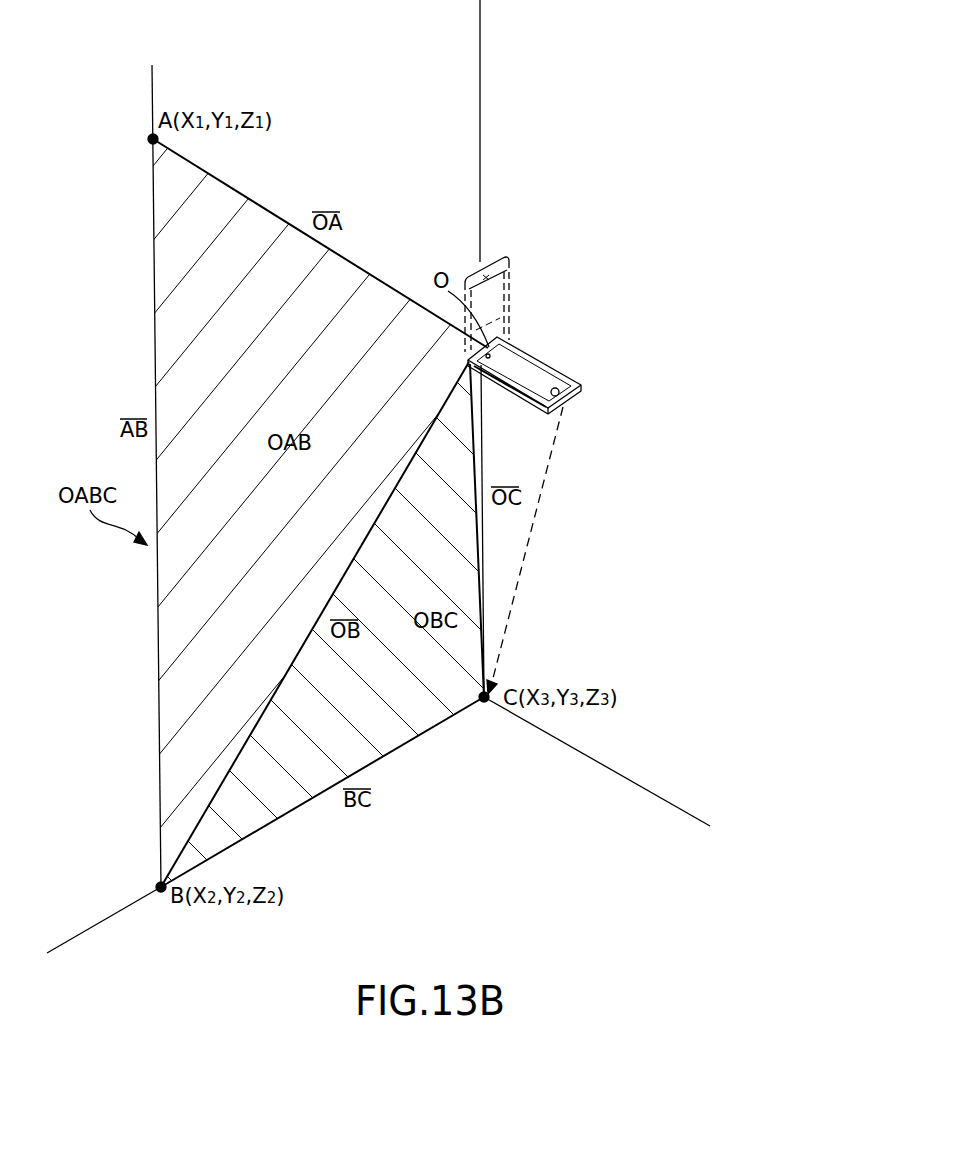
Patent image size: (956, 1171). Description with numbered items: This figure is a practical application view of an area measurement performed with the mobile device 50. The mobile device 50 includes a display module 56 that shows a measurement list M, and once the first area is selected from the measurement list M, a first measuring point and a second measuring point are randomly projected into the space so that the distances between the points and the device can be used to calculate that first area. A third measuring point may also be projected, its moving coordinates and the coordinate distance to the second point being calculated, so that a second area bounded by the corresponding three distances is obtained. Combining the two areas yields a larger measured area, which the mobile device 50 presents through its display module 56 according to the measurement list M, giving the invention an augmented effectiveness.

The mobile device 50 is at (516, 254).
The display module 56 is at (512, 276).
The measurement list M is at (500, 326).